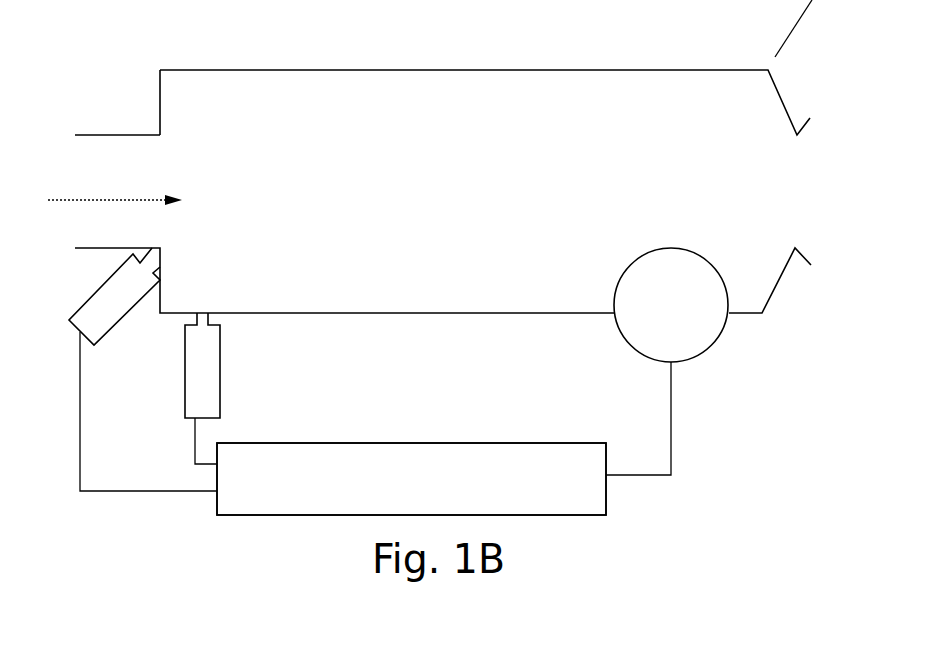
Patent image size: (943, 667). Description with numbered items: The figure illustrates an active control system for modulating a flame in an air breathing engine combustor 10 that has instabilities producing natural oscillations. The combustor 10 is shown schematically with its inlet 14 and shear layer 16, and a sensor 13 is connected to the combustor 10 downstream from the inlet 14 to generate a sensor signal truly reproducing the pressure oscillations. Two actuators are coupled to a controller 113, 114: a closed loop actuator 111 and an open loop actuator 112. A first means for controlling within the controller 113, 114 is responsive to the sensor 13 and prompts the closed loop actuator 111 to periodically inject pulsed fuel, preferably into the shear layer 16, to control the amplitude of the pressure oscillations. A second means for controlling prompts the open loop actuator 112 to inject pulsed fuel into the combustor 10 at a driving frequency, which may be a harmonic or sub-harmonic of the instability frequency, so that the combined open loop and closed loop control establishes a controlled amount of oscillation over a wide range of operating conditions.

The combustor 10 is at (660, 100).
The inlet 14 is at (125, 160).
The shear layer 16 is at (184, 97).
The sensor 13 is at (692, 343).
The closed loop actuator 111 is at (207, 390).
The open loop actuator 112 is at (95, 312).
The controller 113 is at (558, 491).
The controller 114 is at (411, 479).